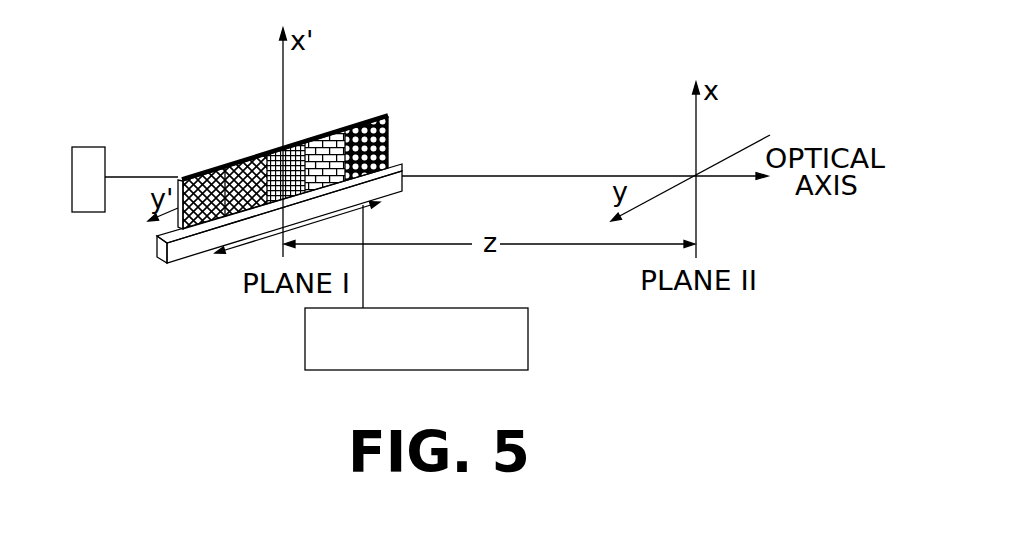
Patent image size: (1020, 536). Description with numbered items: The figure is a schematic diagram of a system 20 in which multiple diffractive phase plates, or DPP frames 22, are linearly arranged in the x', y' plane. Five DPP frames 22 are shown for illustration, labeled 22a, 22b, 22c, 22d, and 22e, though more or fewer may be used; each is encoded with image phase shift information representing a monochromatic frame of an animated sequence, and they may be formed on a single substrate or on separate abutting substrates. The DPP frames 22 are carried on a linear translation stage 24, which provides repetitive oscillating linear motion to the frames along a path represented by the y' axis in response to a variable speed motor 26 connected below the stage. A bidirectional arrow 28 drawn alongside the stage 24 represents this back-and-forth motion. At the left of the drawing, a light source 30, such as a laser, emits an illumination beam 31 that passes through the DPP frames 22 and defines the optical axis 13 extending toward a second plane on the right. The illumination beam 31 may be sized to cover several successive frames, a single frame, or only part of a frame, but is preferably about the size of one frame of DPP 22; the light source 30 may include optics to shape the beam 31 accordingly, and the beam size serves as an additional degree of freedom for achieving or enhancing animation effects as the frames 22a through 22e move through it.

The system 20 is at (498, 56).
The optical axis 13 is at (580, 173).
The DPP frames 22 is at (291, 145).
The DPP frame 22a is at (201, 176).
The DPP frame 22b is at (247, 161).
The DPP frame 22c is at (271, 152).
The DPP frame 22d is at (318, 137).
The DPP frame 22e is at (363, 121).
The linear translation stage 24 is at (404, 166).
The variable speed motor 26 is at (528, 342).
The bidirectional arrow 28 is at (240, 255).
The light source 30 is at (83, 147).
The illumination beam 31 is at (131, 176).